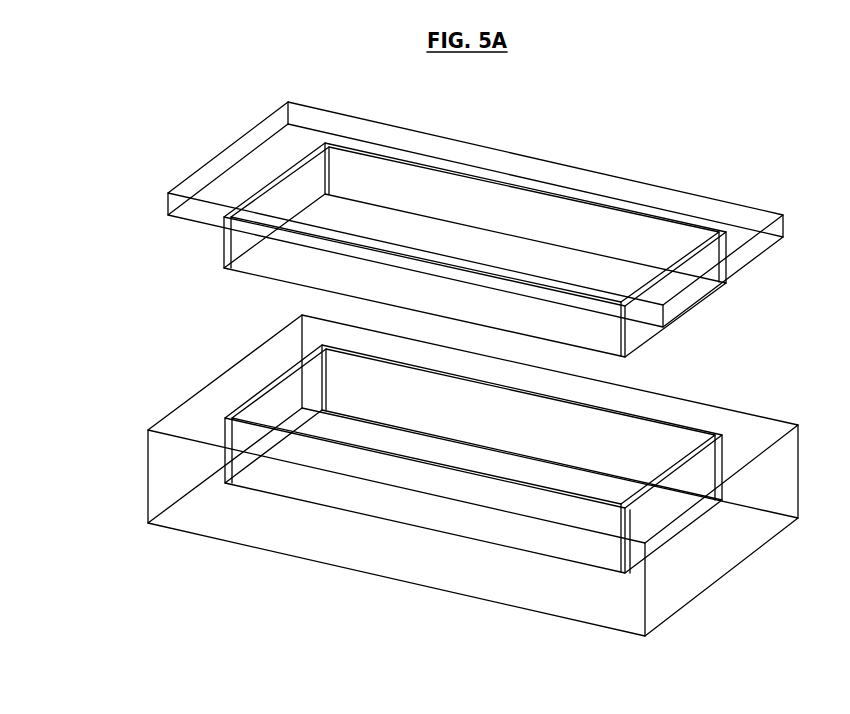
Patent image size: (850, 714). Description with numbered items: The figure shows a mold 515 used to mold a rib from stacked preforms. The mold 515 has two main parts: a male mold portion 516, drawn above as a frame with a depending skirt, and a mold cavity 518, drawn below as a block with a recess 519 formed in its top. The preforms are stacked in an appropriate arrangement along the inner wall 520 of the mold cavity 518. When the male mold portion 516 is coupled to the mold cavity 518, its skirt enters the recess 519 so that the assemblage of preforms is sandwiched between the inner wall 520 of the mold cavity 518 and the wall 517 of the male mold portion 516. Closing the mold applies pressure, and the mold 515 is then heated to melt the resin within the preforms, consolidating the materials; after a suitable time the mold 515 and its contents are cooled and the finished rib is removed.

The mold 515 is at (762, 158).
The male mold portion 516 is at (263, 142).
The wall of male mold portion 517 is at (268, 258).
The mold cavity 518 is at (226, 521).
The recess / cavity 519 is at (270, 399).
The inner wall of mold cavity 520 is at (640, 425).